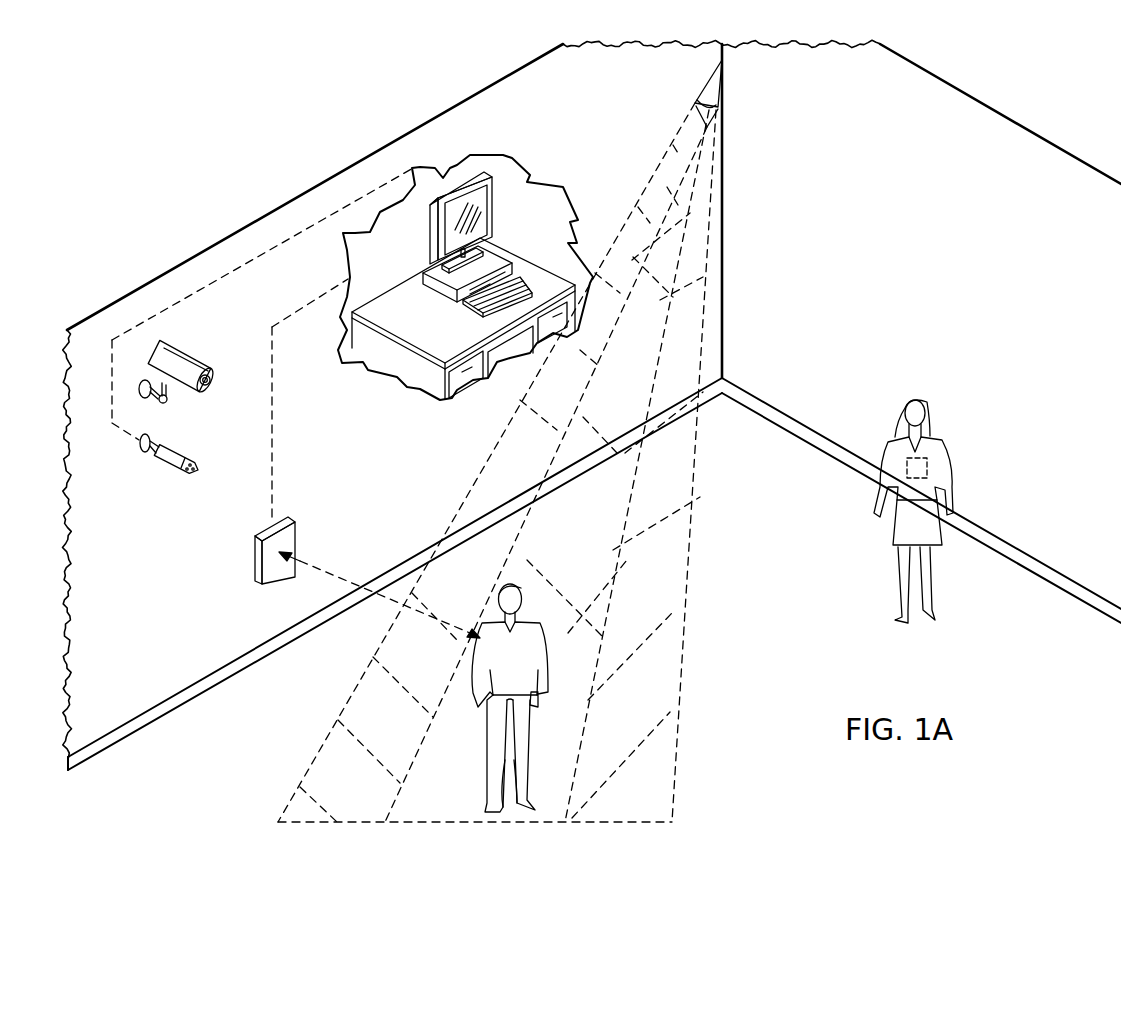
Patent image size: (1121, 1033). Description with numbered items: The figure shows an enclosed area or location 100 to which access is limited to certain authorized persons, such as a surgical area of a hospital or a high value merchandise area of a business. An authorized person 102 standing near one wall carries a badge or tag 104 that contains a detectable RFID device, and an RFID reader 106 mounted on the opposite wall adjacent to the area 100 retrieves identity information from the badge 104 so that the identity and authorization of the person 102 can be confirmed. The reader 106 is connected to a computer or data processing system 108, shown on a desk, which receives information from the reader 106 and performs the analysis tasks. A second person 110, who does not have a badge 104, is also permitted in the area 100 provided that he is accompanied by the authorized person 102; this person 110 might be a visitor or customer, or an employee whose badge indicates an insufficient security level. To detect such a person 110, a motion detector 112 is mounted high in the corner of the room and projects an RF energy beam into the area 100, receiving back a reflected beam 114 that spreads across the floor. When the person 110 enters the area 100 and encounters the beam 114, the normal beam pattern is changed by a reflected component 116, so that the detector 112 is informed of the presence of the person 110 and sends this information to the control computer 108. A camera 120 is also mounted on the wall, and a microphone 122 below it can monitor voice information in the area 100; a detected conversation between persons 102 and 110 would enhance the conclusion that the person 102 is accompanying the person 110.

The enclosed area 100 is at (1086, 111).
The authorized person 102 is at (933, 567).
The RFID badge 104 is at (907, 452).
The RFID reader 106 is at (297, 543).
The computer 108 is at (495, 207).
The accompanied person 110 is at (487, 760).
The motion detector 112 is at (703, 86).
The reflected beam 114 is at (361, 676).
The reflected component 116 is at (668, 172).
The camera 120 is at (212, 341).
The microphone 122 is at (203, 435).